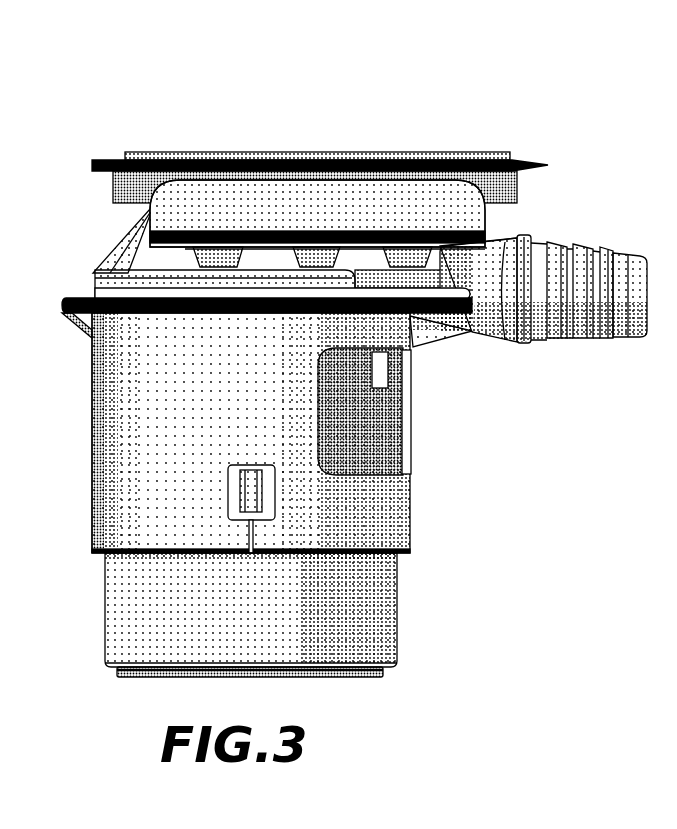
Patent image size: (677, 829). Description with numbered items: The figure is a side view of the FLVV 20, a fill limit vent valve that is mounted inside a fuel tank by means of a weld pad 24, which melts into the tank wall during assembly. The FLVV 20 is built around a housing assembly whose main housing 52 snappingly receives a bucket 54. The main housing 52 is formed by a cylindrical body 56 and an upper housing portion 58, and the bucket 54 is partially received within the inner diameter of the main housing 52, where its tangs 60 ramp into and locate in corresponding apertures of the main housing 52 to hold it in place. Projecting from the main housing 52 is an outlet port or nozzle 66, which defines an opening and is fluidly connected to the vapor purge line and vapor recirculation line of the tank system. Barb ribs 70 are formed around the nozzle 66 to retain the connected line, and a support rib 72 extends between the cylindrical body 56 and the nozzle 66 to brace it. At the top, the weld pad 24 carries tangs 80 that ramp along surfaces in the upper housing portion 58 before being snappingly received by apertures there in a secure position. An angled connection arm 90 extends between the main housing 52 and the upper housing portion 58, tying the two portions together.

The FLVV 20 is at (350, 368).
The weld pad 24 is at (485, 162).
The main housing 52 is at (112, 392).
The bucket 54 is at (388, 608).
The cylindrical body 56 is at (112, 438).
The upper housing portion 58 is at (273, 198).
The tangs 60 is at (265, 498).
The nozzle 66 is at (555, 311).
The barb ribs 70 is at (573, 339).
The support rib 72 is at (430, 337).
The tangs 80 is at (402, 250).
The angled connection arm 90 is at (127, 255).